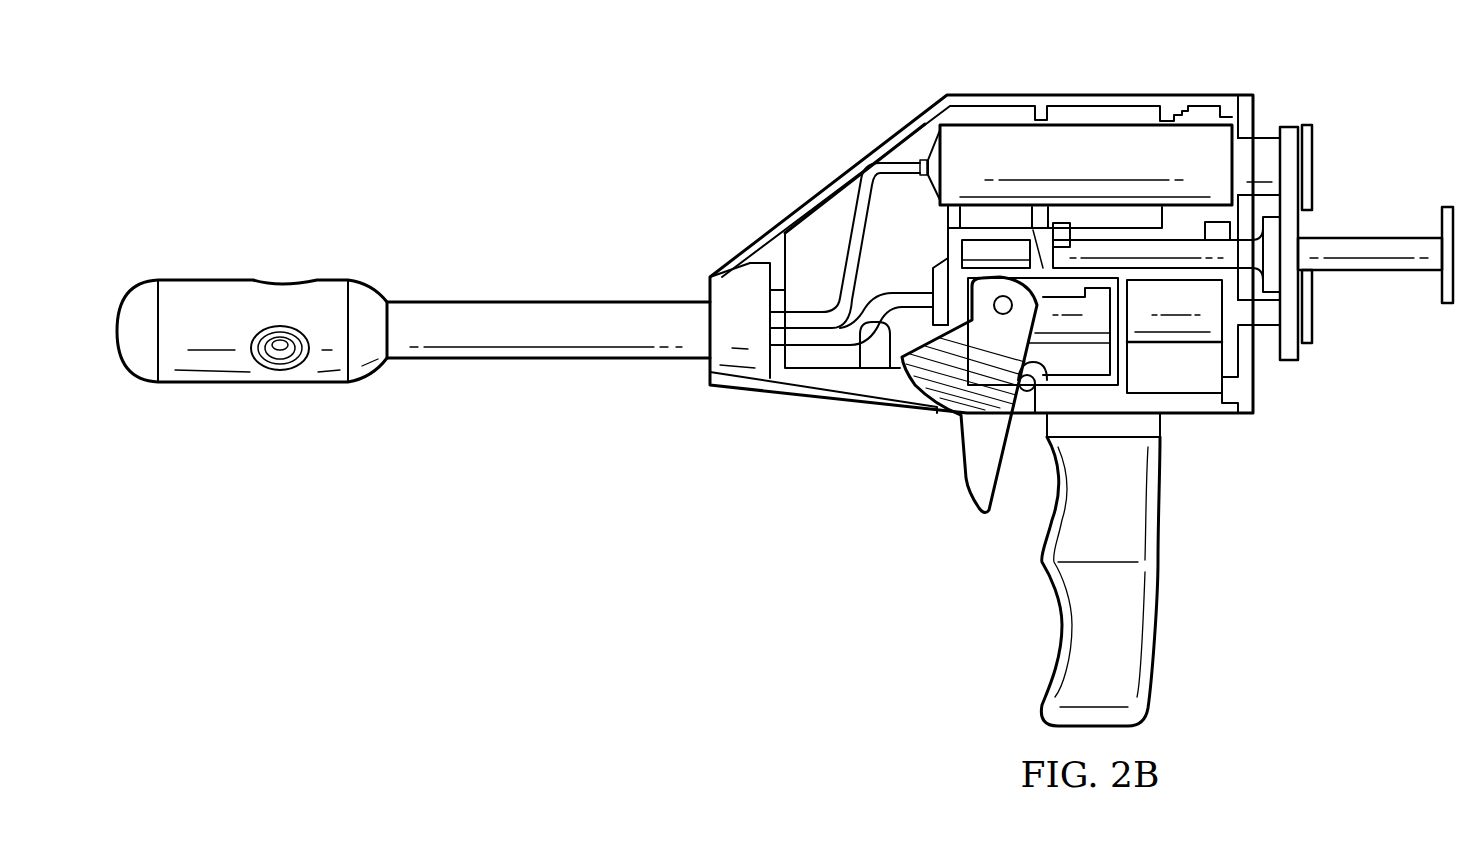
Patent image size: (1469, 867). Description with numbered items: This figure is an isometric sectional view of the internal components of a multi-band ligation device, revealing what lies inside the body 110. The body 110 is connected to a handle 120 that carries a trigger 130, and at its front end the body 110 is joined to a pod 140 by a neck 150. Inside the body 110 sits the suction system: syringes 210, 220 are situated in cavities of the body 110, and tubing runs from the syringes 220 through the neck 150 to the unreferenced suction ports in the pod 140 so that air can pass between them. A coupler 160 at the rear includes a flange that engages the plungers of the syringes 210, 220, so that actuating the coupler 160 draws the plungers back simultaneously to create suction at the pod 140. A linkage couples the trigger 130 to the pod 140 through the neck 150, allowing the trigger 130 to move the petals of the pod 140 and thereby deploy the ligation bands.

The body 110 is at (1255, 395).
The handle 120 is at (1157, 605).
The trigger 130 is at (965, 482).
The pod 140 is at (215, 277).
The neck 150 is at (548, 300).
The coupler 160 is at (1377, 240).
The syringe 210 is at (1313, 145).
The syringe 220 is at (1205, 132).